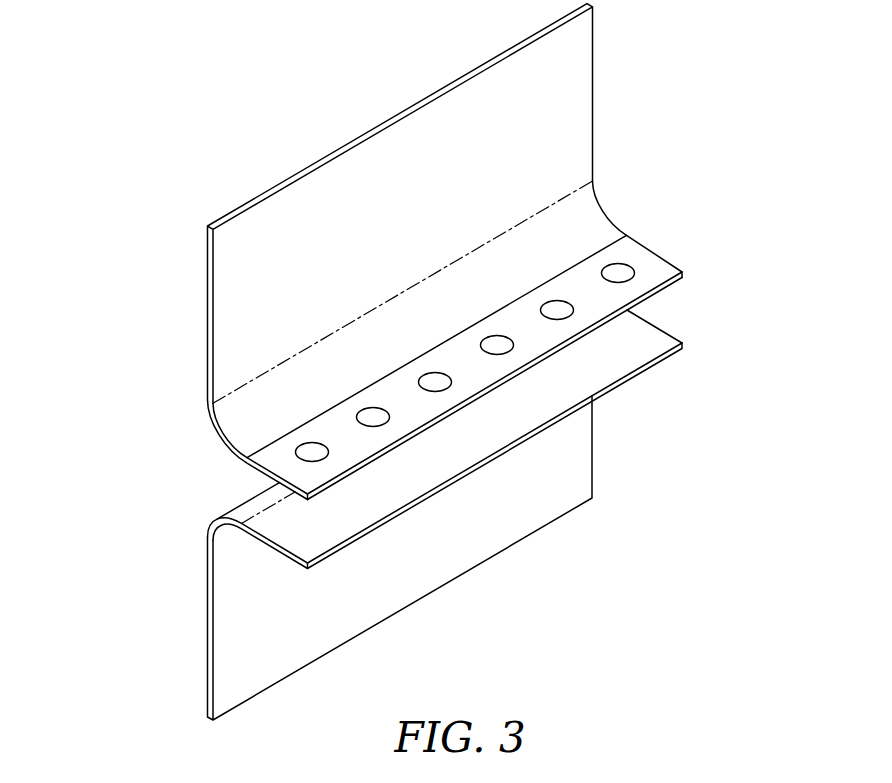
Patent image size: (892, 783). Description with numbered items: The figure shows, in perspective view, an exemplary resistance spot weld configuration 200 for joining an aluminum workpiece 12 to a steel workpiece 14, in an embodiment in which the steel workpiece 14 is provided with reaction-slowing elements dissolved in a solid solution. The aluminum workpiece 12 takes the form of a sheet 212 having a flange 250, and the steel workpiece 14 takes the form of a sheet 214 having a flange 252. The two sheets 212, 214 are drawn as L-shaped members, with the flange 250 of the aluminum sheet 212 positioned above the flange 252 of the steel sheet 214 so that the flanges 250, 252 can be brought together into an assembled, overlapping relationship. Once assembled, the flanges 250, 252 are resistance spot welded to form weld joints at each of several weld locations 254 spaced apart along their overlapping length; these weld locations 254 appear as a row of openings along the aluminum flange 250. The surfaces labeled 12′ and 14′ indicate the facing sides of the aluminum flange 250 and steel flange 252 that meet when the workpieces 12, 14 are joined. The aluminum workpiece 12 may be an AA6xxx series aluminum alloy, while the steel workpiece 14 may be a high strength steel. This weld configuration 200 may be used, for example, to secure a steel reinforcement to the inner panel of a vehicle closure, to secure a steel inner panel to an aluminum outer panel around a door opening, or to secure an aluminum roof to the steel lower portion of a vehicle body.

The weld configuration 200 is at (439, 362).
The aluminum workpiece 12 is at (500, 252).
The sheet 212 is at (576, 160).
The flange 250 is at (544, 317).
The weld locations 254 is at (634, 266).
The lower surface of first plate flange 12′ is at (662, 293).
The steel workpiece 14 is at (508, 515).
The sheet 214 is at (578, 441).
The upper surface of second plate flange 14′ is at (662, 320).
The flange 252 is at (655, 340).